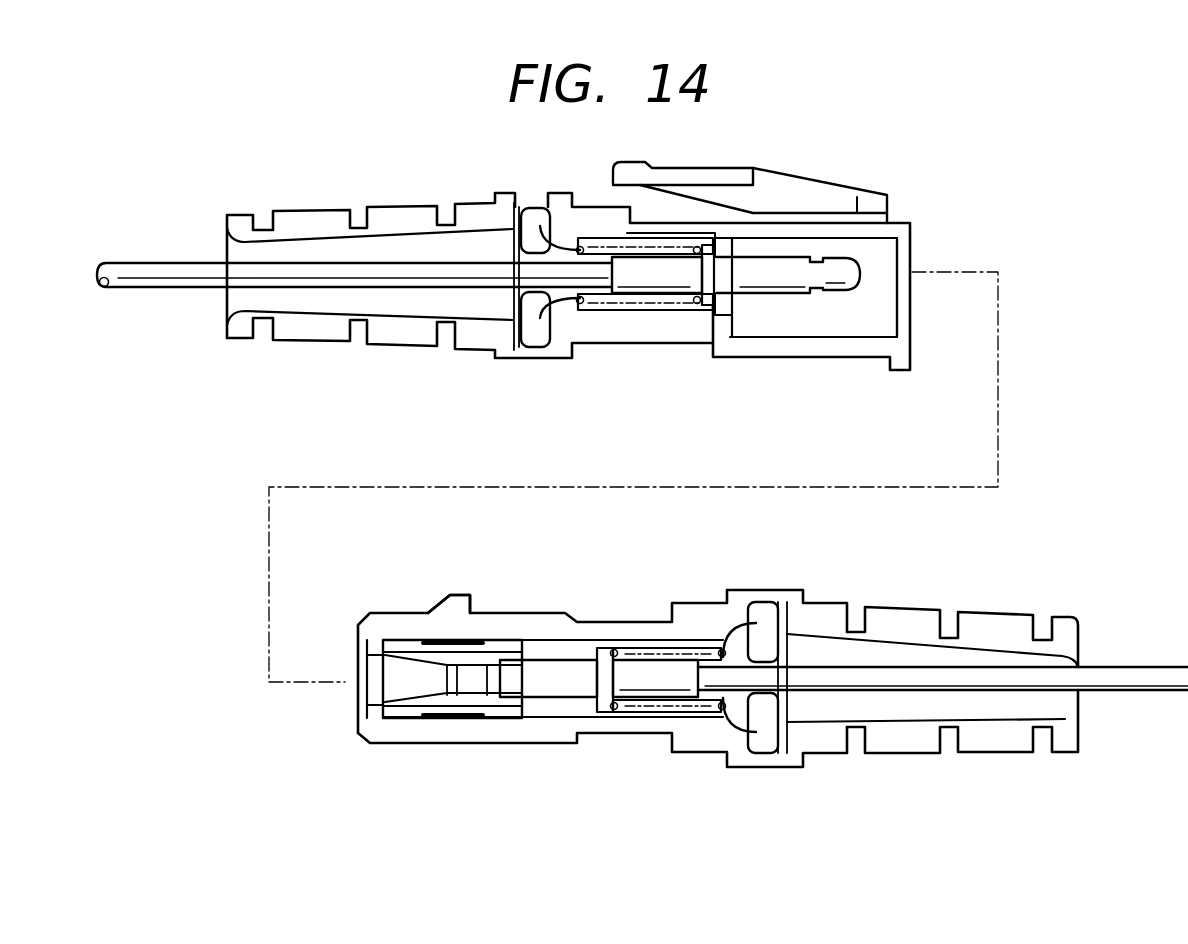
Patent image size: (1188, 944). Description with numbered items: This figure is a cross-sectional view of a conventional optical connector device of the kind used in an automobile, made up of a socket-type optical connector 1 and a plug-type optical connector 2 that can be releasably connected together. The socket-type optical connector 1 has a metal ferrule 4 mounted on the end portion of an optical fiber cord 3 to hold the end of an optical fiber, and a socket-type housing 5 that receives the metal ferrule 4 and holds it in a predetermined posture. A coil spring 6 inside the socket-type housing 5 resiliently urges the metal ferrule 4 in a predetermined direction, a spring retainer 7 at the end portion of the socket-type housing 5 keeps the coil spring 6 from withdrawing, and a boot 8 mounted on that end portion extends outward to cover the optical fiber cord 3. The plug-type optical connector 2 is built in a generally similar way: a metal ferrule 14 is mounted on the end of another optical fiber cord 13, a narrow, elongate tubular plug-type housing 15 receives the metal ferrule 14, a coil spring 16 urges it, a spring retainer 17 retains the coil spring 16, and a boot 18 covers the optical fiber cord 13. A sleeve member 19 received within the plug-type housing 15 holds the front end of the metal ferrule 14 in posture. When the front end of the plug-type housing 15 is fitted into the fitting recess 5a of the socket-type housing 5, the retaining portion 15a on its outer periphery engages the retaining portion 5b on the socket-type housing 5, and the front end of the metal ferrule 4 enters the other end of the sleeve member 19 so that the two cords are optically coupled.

The socket-type optical connector 1 is at (930, 190).
The plug-type optical connector 2 is at (357, 747).
The optical fiber cord 3 is at (158, 262).
The metal ferrule 4 is at (772, 262).
The socket-type housing 5 is at (818, 355).
The fitting recess 5a is at (868, 332).
The retaining portion 5b is at (850, 200).
The coil spring 6 is at (584, 342).
The spring retainer 7 is at (545, 348).
The boot 8 is at (324, 333).
The optical fiber cord 13 is at (1139, 676).
The metal ferrule 14 is at (558, 668).
The plug-type housing 15 is at (473, 744).
The retaining portion 15a is at (464, 594).
The coil spring 16 is at (618, 722).
The spring retainer 17 is at (768, 748).
The boot 18 is at (1000, 754).
The sleeve member 19 is at (450, 713).